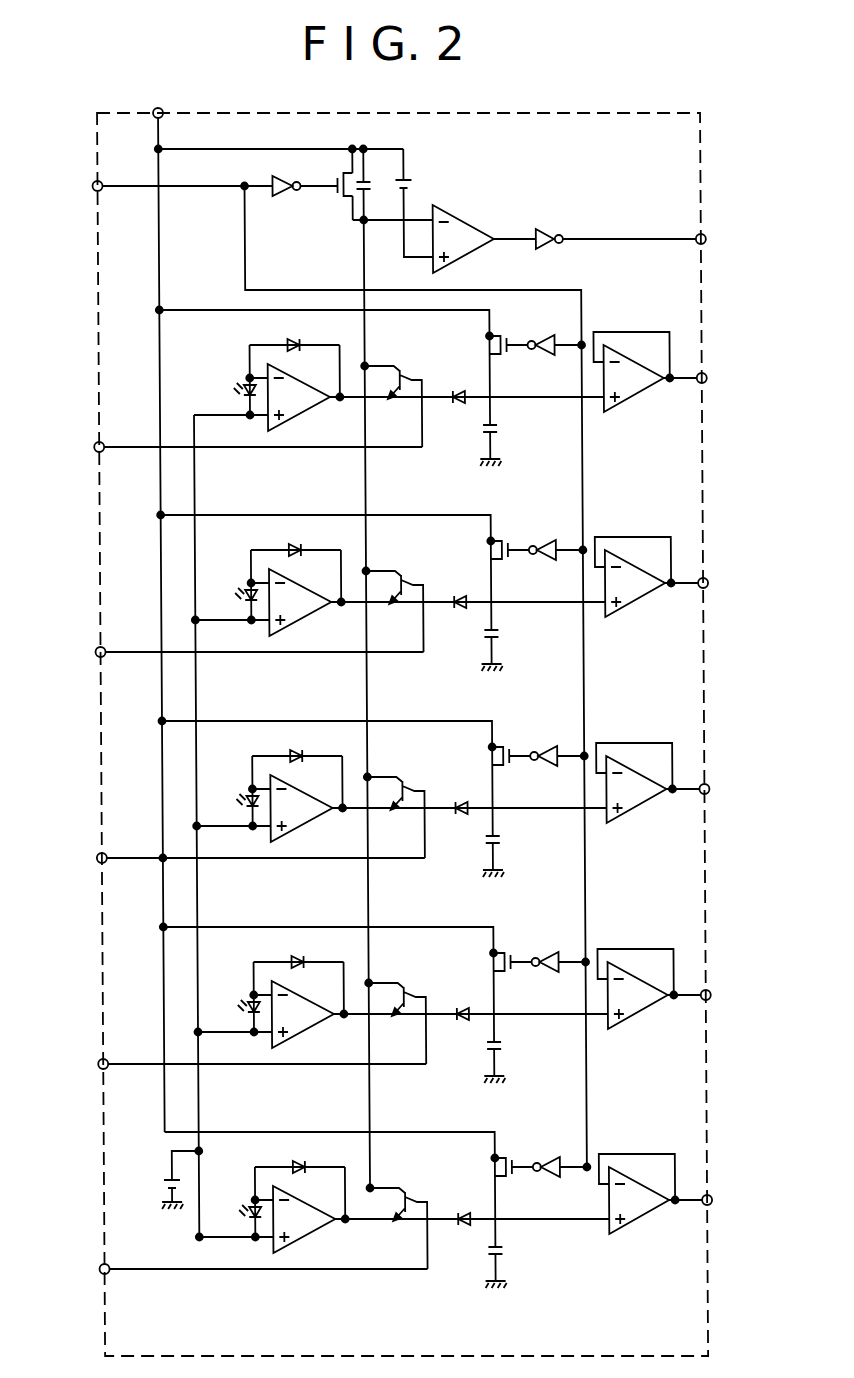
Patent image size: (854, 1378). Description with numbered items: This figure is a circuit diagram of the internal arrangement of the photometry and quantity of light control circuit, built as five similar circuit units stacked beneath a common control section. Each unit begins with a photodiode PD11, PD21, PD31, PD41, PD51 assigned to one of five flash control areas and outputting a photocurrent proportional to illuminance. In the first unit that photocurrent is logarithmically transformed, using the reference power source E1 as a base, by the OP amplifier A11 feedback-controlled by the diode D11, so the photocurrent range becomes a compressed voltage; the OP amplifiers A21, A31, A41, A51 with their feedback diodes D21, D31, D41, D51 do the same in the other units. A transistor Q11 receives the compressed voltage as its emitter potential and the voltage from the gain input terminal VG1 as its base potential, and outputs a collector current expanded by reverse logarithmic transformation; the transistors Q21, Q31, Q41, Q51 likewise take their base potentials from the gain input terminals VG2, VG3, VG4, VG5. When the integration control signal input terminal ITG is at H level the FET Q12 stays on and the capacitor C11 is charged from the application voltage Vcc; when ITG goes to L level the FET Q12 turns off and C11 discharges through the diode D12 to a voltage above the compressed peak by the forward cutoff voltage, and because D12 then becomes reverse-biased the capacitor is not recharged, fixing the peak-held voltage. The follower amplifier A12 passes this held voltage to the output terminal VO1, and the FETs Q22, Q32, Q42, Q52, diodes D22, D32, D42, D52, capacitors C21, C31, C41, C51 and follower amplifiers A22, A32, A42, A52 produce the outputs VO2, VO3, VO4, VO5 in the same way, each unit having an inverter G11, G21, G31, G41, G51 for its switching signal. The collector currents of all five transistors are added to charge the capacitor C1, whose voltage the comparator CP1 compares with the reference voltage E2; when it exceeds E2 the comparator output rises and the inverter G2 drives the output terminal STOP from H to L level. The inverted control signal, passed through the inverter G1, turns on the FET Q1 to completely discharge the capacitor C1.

The application voltage Vcc is at (151, 103).
The integration control signal input terminal ITG is at (159, 177).
The output terminal STOP is at (725, 230).
The inverter G1 is at (304, 176).
The FET Q1 is at (374, 184).
The capacitor C1 is at (375, 184).
The reference voltage E2 is at (414, 203).
The comparator CP1 is at (484, 239).
The inverter G2 is at (616, 232).
The reference power source E1 is at (166, 1179).
The diode D11 is at (294, 359).
The photodiode PD11 is at (227, 392).
The OP amplifier A11 is at (399, 397).
The transistor Q11 is at (391, 405).
The gain input terminal VG1 is at (239, 439).
The diode D12 is at (455, 386).
The capacitor C11 is at (479, 410).
The FET Q12 is at (507, 334).
The inverter G11 is at (556, 353).
The follower amplifier A12 is at (645, 372).
The output terminal VO1 is at (723, 369).
The diode D21 is at (296, 564).
The photodiode PD21 is at (228, 597).
The OP amplifier A21 is at (400, 602).
The transistor Q21 is at (392, 610).
The gain input terminal VG2 is at (240, 644).
The diode D22 is at (456, 591).
The capacitor C21 is at (480, 615).
The FET Q22 is at (508, 539).
The inverter G21 is at (558, 558).
The follower amplifier A22 is at (647, 577).
The output terminal VO2 is at (724, 574).
The diode D31 is at (297, 770).
The photodiode PD31 is at (229, 803).
The OP amplifier A31 is at (401, 808).
The transistor Q31 is at (394, 816).
The gain input terminal VG3 is at (242, 850).
The diode D32 is at (457, 797).
The capacitor C31 is at (481, 821).
The FET Q32 is at (510, 745).
The inverter G31 is at (559, 764).
The follower amplifier A32 is at (648, 783).
The output terminal VO3 is at (725, 780).
The diode D41 is at (298, 976).
The photodiode PD41 is at (231, 1009).
The OP amplifier A41 is at (403, 1014).
The transistor Q41 is at (395, 1022).
The gain input terminal VG4 is at (243, 1056).
The diode D42 is at (459, 1003).
The capacitor C41 is at (483, 1027).
The FET Q42 is at (511, 951).
The inverter G41 is at (560, 970).
The follower amplifier A42 is at (649, 989).
The output terminal VO4 is at (727, 986).
The diode D51 is at (300, 1181).
The photodiode PD51 is at (232, 1214).
The OP amplifier A51 is at (404, 1219).
The transistor Q51 is at (396, 1227).
The gain input terminal VG5 is at (244, 1261).
The diode D52 is at (460, 1208).
The capacitor C51 is at (484, 1232).
The FET Q52 is at (512, 1156).
The inverter G51 is at (562, 1175).
The follower amplifier A52 is at (651, 1194).
The output terminal VO5 is at (728, 1191).